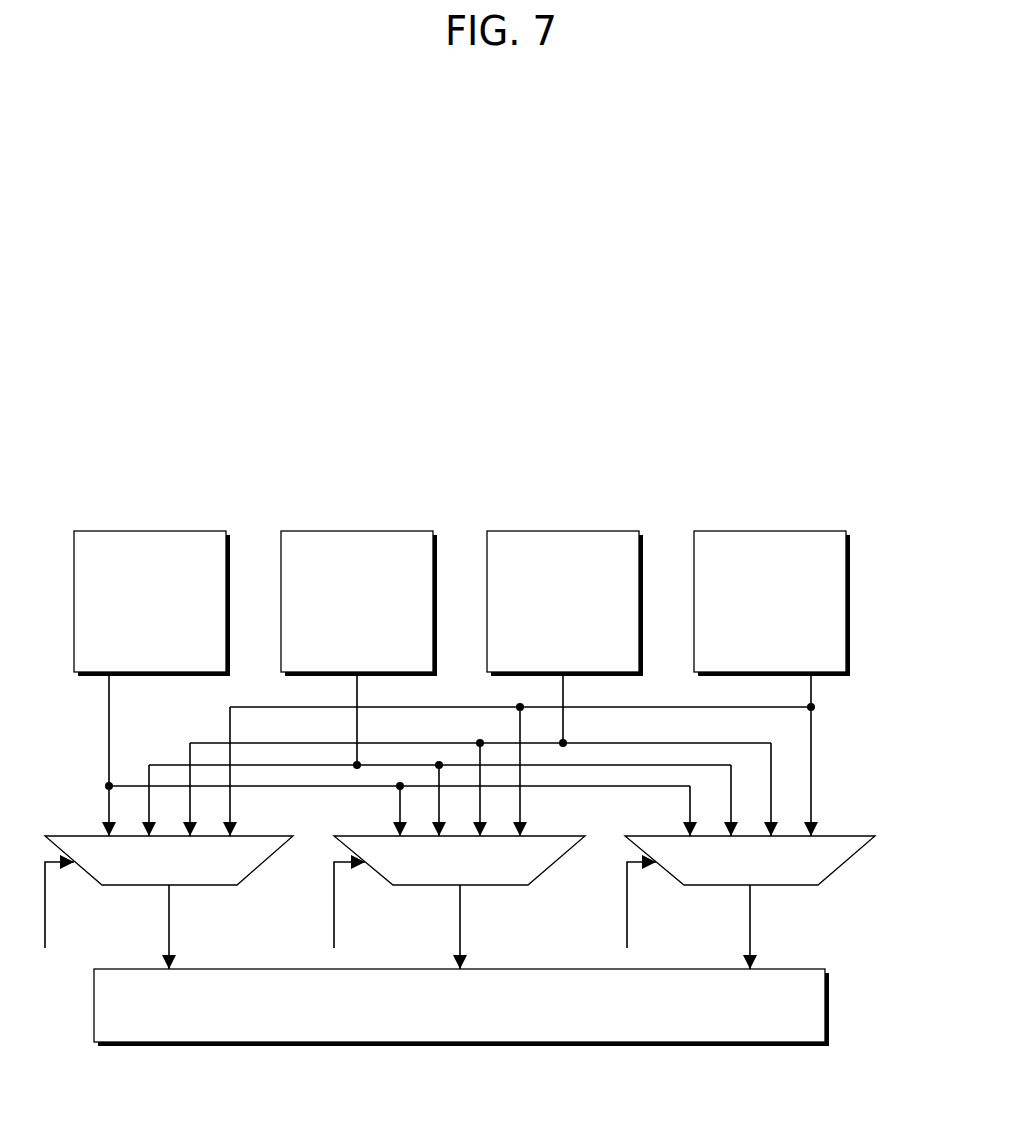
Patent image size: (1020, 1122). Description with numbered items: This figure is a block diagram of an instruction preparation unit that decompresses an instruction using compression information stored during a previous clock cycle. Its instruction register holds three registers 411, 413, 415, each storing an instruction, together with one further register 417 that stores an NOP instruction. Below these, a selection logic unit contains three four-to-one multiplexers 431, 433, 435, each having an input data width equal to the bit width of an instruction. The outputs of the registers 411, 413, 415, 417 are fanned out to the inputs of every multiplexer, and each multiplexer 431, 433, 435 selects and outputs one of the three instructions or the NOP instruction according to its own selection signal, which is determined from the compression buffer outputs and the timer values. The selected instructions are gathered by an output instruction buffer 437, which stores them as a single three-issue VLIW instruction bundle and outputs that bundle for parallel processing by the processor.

The register 411 is at (150, 531).
The register 413 is at (357, 531).
The register 415 is at (563, 531).
The register 417 is at (771, 531).
The 4-to-1 multiplexer 431 is at (265, 862).
The 4-to-1 multiplexer 433 is at (556, 862).
The 4-to-1 multiplexer 435 is at (848, 862).
The output instruction buffer 437 is at (829, 1010).